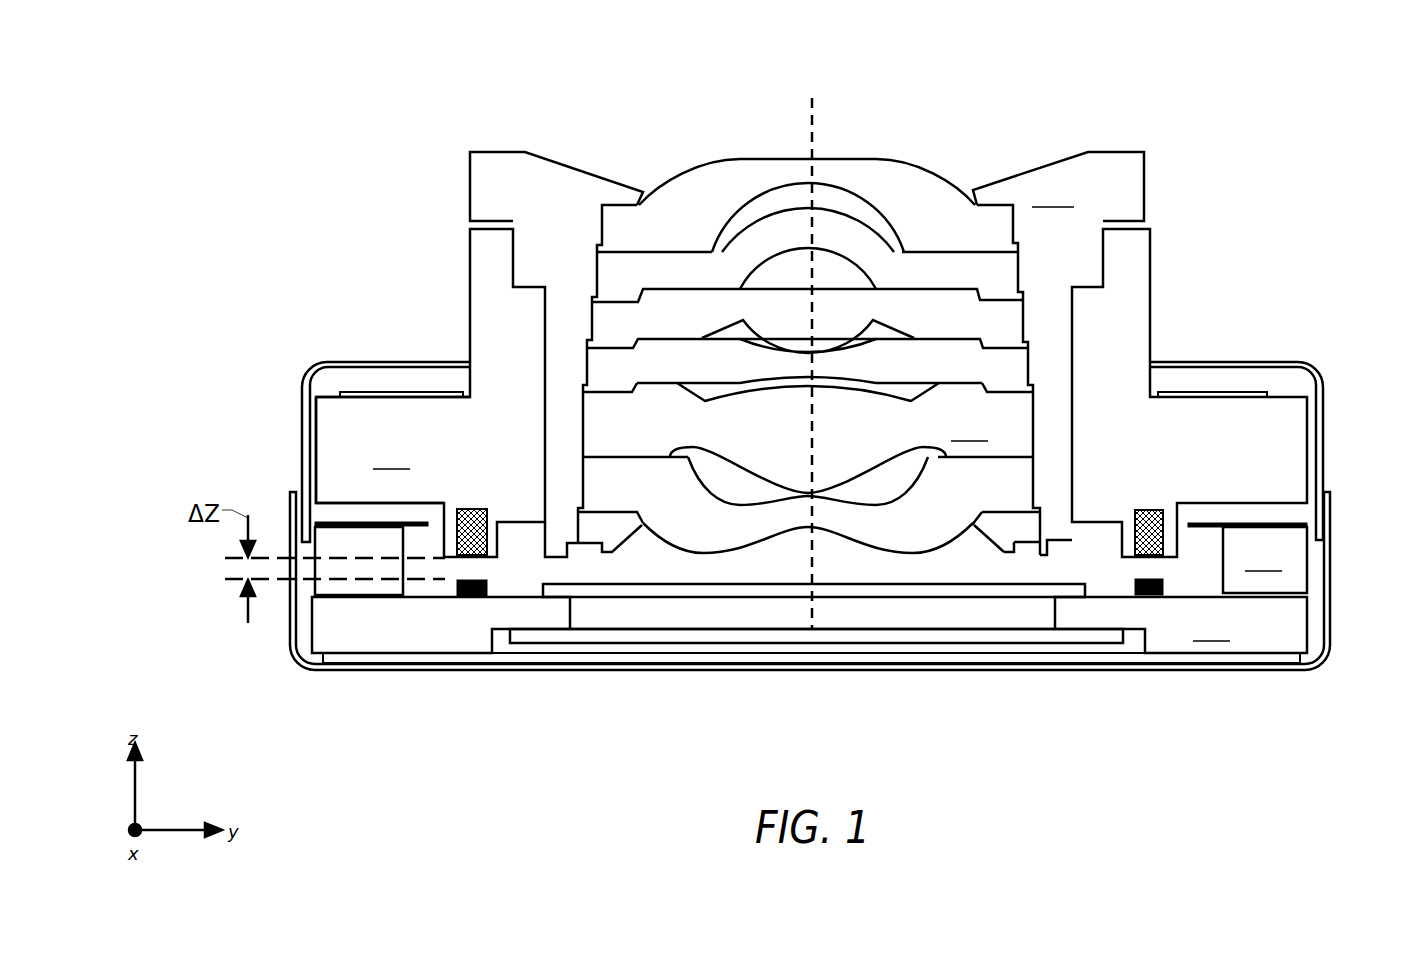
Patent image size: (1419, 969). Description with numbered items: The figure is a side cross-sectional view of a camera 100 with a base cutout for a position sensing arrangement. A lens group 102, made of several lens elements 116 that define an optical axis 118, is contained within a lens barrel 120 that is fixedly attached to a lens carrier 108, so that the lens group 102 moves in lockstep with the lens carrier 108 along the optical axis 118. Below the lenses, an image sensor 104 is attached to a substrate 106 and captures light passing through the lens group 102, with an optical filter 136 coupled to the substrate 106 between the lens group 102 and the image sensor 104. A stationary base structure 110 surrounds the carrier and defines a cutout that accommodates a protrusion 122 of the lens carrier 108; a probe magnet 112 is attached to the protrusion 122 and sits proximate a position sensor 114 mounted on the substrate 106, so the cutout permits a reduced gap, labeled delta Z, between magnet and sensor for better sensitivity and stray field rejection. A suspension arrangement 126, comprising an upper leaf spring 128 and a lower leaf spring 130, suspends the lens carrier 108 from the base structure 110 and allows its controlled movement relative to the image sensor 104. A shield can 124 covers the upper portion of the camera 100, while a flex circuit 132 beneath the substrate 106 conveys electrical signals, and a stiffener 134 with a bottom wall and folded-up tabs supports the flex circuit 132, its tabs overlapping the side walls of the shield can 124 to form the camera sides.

The camera 100 is at (541, 107).
The lens group 102 is at (889, 153).
The image sensor 104 is at (720, 633).
The substrate 106 is at (809, 625).
The lens carrier 108 is at (393, 450).
The base structure 110 is at (1265, 560).
The probe magnet 112 is at (1148, 508).
The position sensor 114 is at (1163, 580).
The lens element 116 is at (809, 380).
The optical axis 118 is at (810, 121).
The lens barrel 120 is at (807, 186).
The protrusion 122 is at (1180, 518).
The shield can 124 is at (1275, 366).
The suspension arrangement 126 is at (343, 390).
The upper leaf spring 128 is at (397, 391).
The lower leaf spring 130 is at (343, 521).
The flex circuit 132 is at (990, 655).
The stiffener 134 is at (1332, 568).
The optical filter 136 is at (630, 588).